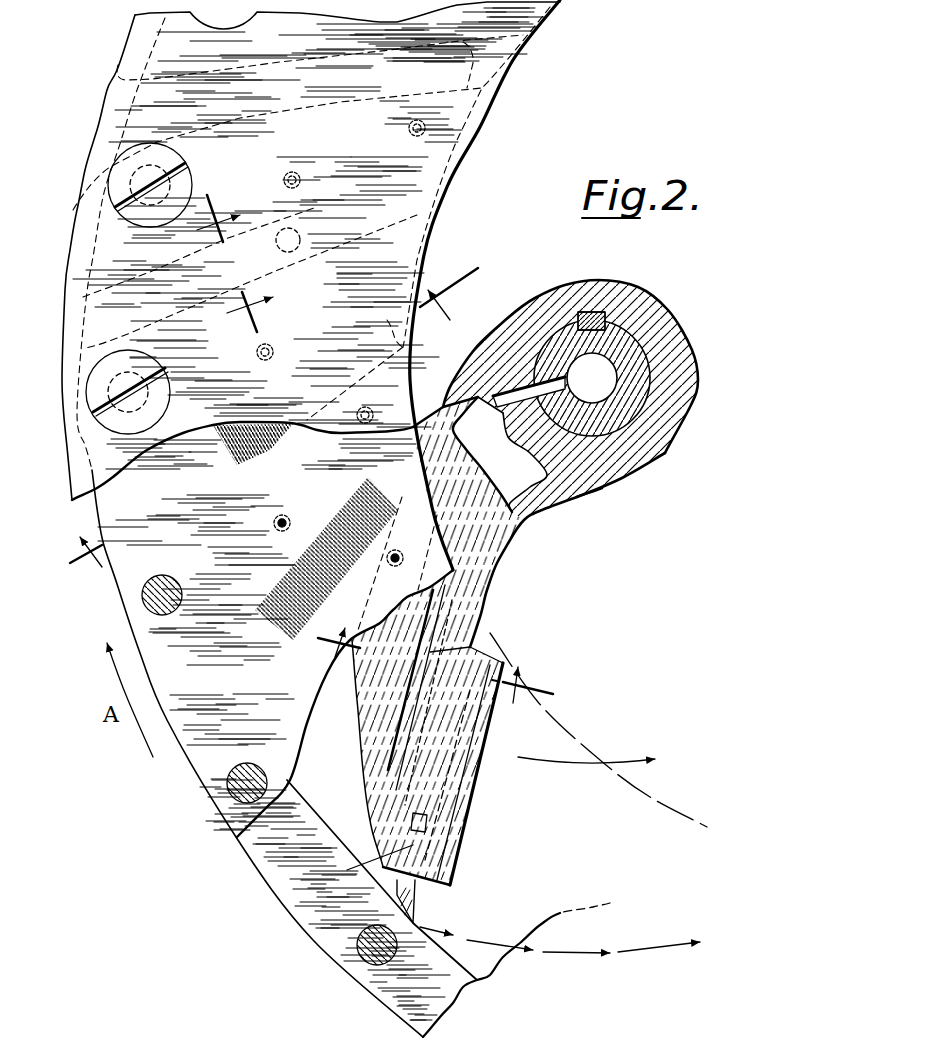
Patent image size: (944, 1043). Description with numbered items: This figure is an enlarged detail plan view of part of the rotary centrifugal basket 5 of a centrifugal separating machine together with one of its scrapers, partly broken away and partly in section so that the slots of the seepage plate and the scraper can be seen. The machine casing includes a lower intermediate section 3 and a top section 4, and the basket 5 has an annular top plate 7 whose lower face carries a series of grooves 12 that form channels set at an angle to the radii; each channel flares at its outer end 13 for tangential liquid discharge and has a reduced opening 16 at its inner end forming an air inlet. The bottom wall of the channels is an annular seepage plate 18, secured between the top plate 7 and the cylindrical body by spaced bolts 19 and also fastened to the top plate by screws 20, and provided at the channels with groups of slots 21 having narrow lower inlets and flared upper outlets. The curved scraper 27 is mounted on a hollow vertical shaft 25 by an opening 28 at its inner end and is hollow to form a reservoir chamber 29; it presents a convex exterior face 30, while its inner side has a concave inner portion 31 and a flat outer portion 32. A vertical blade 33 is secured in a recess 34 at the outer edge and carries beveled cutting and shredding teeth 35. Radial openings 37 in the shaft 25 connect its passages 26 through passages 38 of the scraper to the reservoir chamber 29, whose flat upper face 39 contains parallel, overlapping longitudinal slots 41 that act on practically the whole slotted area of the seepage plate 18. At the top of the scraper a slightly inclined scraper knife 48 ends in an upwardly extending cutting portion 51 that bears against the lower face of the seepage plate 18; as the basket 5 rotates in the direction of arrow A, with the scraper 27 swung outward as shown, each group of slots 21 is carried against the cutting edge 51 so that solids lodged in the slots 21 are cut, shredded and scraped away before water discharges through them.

The lower intermediate section 3 is at (278, 428).
The top section 4 is at (274, 422).
The centrifugal basket 5 is at (282, 892).
The top plate 7 is at (311, 251).
The grooves 12 is at (288, 240).
The outer end of the channel 13 is at (100, 118).
The reduced opening 16 is at (414, 345).
The seepage plate 18 is at (275, 638).
The bolts 19 is at (363, 956).
The screws 20 is at (276, 523).
The slots 21 is at (325, 525).
The vertical shafts 25 is at (637, 380).
The passages of the hollow shaft 26 is at (592, 378).
The curved scraper 27 is at (508, 553).
The openings 28 is at (643, 353).
The reservoir chambers 29 is at (512, 454).
The convex exterior faces 30 is at (356, 697).
The concave inner portions 31 is at (572, 490).
The plane or flat outer portions 32 is at (473, 640).
The vertical blades 33 is at (347, 870).
The recesses 34 is at (411, 822).
The cutting and shredding teeth 35 is at (413, 913).
The radial openings 37 is at (555, 335).
The passages of the scrapers 38 is at (503, 417).
The flat upper faces 39 is at (482, 470).
The slots 41 is at (447, 630).
The scraper knife 48 is at (441, 848).
The cutting portion 51 is at (477, 779).